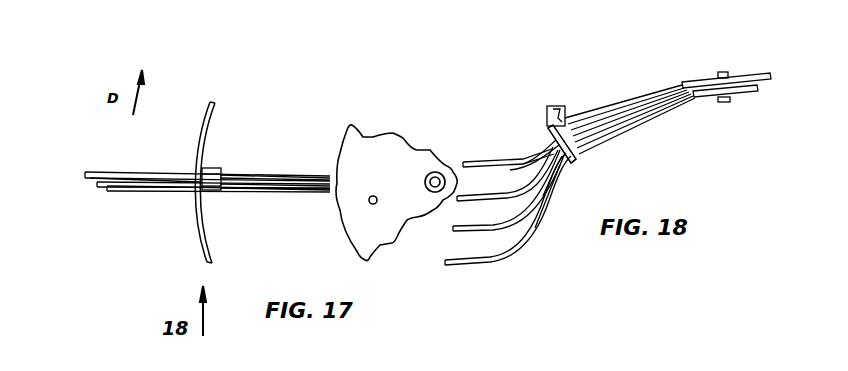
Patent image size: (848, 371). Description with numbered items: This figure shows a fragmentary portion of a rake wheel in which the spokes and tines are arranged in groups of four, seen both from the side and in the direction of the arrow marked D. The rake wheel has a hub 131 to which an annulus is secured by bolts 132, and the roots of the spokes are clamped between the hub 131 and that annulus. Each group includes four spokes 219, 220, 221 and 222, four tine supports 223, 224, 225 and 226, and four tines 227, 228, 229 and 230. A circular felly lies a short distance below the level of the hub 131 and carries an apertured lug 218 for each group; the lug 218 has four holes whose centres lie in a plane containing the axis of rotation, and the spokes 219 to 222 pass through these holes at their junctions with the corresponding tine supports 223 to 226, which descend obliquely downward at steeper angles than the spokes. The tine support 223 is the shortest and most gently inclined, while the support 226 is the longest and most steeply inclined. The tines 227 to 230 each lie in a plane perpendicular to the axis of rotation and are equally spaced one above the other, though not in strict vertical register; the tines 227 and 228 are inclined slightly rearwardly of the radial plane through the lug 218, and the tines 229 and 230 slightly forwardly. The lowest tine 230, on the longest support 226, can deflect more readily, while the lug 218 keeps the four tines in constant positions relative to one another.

In FIG. 17, the hub 131 is at (362, 137).
In FIG. 18, the hub 131 is at (692, 82).
In FIG. 17, the bolts 132 is at (370, 202).
In FIG. 18, the bolts 132 is at (730, 73).
In FIG. 17, the apertured lug 218 is at (214, 167).
In FIG. 18, the apertured lug 218 is at (577, 162).
In FIG. 17, the spoke 219 is at (284, 170).
In FIG. 18, the spoke 219 is at (587, 118).
In FIG. 17, the spoke 220 is at (270, 175).
In FIG. 18, the spoke 220 is at (624, 113).
In FIG. 17, the spoke 221 is at (304, 189).
In FIG. 18, the spoke 221 is at (640, 113).
In FIG. 17, the spoke 222 is at (274, 188).
In FIG. 18, the spoke 222 is at (627, 133).
In FIG. 18, the tine support 223 is at (528, 146).
In FIG. 18, the tine support 224 is at (525, 166).
In FIG. 18, the tine support 225 is at (548, 188).
In FIG. 18, the tine support 226 is at (538, 222).
In FIG. 17, the tine 227 is at (120, 186).
In FIG. 18, the tine 227 is at (473, 162).
In FIG. 17, the tine 228 is at (116, 187).
In FIG. 18, the tine 228 is at (492, 190).
In FIG. 17, the tine 229 is at (86, 184).
In FIG. 18, the tine 229 is at (474, 228).
In FIG. 17, the tine 230 is at (90, 171).
In FIG. 18, the tine 230 is at (460, 246).